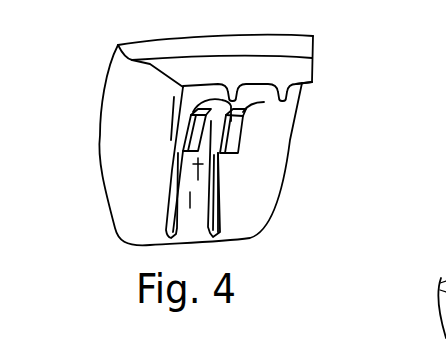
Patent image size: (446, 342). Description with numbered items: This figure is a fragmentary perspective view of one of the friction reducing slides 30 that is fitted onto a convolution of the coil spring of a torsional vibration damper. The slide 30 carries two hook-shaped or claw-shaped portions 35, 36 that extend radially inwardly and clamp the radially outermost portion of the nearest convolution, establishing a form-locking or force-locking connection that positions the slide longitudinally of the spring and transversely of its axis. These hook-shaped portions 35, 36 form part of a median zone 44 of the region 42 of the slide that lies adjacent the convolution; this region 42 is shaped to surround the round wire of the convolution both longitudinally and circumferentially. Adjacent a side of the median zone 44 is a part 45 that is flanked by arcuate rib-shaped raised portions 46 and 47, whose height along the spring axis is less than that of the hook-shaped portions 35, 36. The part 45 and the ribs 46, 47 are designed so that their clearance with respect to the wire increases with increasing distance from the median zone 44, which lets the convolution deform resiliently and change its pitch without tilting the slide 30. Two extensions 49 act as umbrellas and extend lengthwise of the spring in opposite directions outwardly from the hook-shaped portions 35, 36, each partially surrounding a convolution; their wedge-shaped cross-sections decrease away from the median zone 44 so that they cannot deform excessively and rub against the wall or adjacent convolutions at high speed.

The slide 30 is at (120, 80).
The hook-shaped portion 35 is at (190, 133).
The hook-shaped portion 36 is at (238, 131).
The region of the slide 42 is at (170, 163).
The median zone 44 is at (218, 164).
The part of the region 45 is at (209, 98).
The arcuate rib-shaped projection 46 is at (191, 198).
The arcuate rib-shaped projection 47 is at (220, 195).
The extension 49 is at (277, 115).